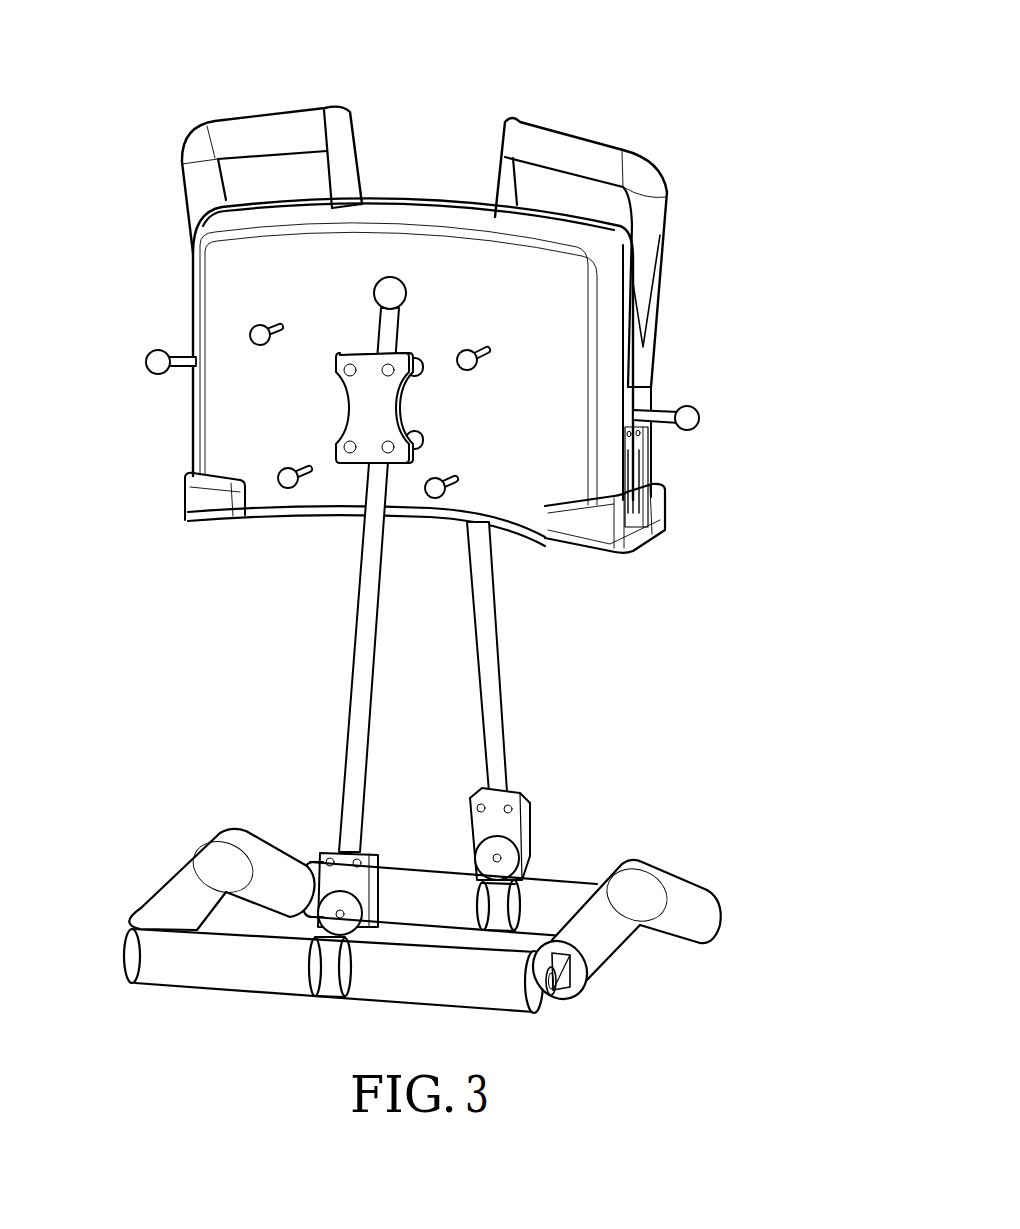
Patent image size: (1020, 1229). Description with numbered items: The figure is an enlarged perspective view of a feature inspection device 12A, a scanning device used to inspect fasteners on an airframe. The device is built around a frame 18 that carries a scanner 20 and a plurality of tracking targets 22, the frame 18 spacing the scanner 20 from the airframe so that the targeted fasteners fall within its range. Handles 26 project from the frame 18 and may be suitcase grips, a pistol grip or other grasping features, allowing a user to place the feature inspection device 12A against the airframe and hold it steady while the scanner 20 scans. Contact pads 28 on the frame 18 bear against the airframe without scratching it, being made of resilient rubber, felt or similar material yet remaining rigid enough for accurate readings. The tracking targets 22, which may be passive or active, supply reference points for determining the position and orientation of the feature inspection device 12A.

The feature inspection device 12A is at (598, 54).
The scanner 20 is at (227, 433).
The handles 26 is at (238, 128).
The tracking targets 22 is at (147, 362).
The frame 18 is at (357, 685).
The contact pads 28 is at (172, 883).